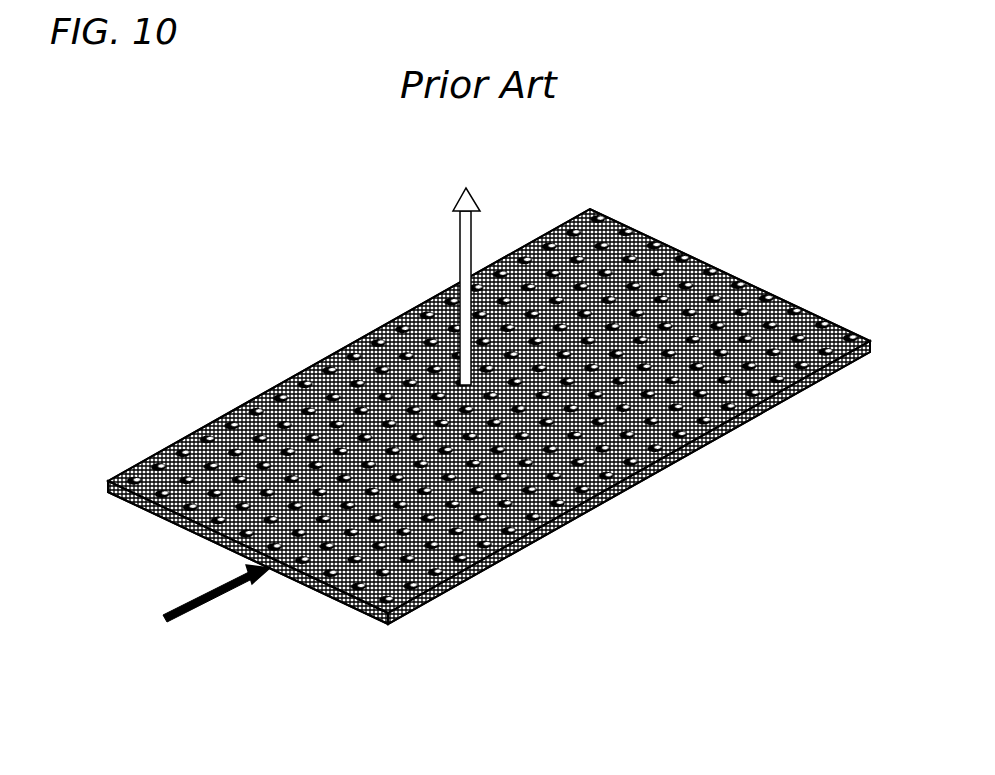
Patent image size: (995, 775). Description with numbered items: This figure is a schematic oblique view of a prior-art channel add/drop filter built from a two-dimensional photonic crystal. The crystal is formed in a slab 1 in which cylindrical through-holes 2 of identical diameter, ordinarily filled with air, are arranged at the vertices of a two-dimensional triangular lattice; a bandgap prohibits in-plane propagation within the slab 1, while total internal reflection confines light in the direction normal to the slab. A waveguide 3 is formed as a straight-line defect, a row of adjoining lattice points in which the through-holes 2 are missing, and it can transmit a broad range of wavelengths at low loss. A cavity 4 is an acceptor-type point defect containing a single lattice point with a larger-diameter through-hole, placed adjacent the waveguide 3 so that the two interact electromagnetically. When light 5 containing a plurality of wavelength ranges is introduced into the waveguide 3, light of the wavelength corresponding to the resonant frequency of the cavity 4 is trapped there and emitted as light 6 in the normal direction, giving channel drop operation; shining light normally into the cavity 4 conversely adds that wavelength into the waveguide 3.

The slab 1 is at (643, 463).
The cylindrical through-holes 2 is at (443, 577).
The waveguide 3 is at (728, 268).
The cavity 4 is at (372, 355).
The light containing a plurality of wavelength ranges 5 is at (187, 592).
The light of wavelength λi 6 is at (470, 252).